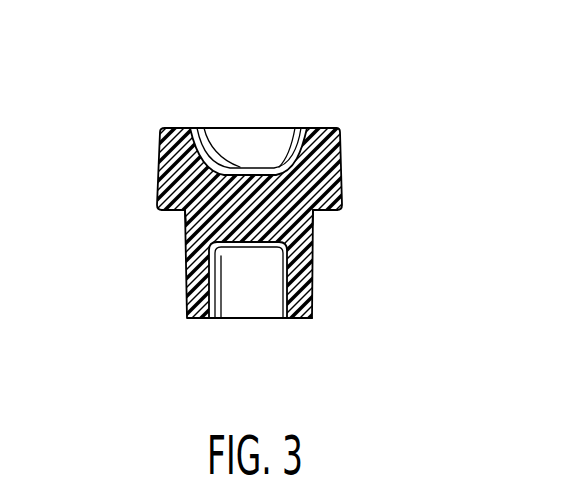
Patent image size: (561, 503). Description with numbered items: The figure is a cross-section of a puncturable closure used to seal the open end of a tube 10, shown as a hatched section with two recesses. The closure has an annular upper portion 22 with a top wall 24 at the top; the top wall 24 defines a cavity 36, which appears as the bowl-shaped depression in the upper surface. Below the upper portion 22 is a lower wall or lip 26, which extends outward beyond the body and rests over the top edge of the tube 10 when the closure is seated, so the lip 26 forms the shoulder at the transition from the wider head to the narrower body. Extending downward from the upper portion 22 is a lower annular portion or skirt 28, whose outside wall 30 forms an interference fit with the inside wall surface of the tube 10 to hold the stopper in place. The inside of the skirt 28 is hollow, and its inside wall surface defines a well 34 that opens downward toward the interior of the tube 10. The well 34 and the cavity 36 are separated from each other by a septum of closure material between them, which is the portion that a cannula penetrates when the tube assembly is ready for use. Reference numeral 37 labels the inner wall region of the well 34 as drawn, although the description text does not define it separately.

The tube 10 is at (401, 118).
The annular upper portion 22 is at (158, 164).
The top wall 24 is at (176, 128).
The lower wall or lip 26 is at (168, 212).
The lower annular portion or skirt 28 is at (188, 290).
The outside wall 30 is at (313, 262).
The well 34 is at (268, 308).
The cavity 36 is at (275, 147).
The bore wall 37 is at (211, 291).